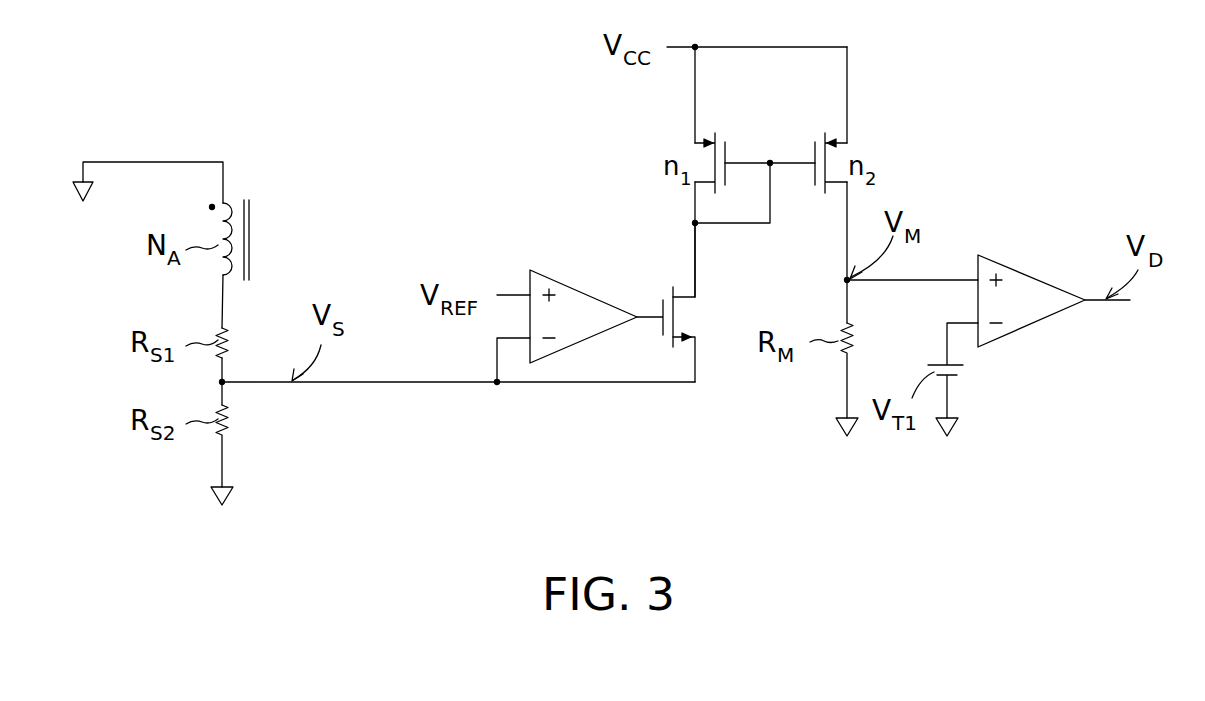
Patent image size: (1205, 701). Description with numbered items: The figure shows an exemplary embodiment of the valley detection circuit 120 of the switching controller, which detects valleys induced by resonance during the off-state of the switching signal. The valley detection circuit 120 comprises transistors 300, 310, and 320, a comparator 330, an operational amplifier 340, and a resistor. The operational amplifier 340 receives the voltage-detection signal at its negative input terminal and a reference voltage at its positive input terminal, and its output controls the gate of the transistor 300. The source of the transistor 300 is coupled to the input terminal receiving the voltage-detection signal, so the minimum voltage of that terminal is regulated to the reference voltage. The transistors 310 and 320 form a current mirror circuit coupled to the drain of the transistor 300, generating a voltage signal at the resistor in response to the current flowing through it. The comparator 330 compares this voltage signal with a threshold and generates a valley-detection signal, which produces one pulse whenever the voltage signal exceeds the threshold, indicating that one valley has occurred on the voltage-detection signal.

The valley detection circuit 120 is at (1067, 155).
The transistor 300 is at (687, 317).
The transistor 310 is at (693, 147).
The transistor 320 is at (849, 147).
The comparator 330 is at (1030, 275).
The operational amplifier 340 is at (583, 291).